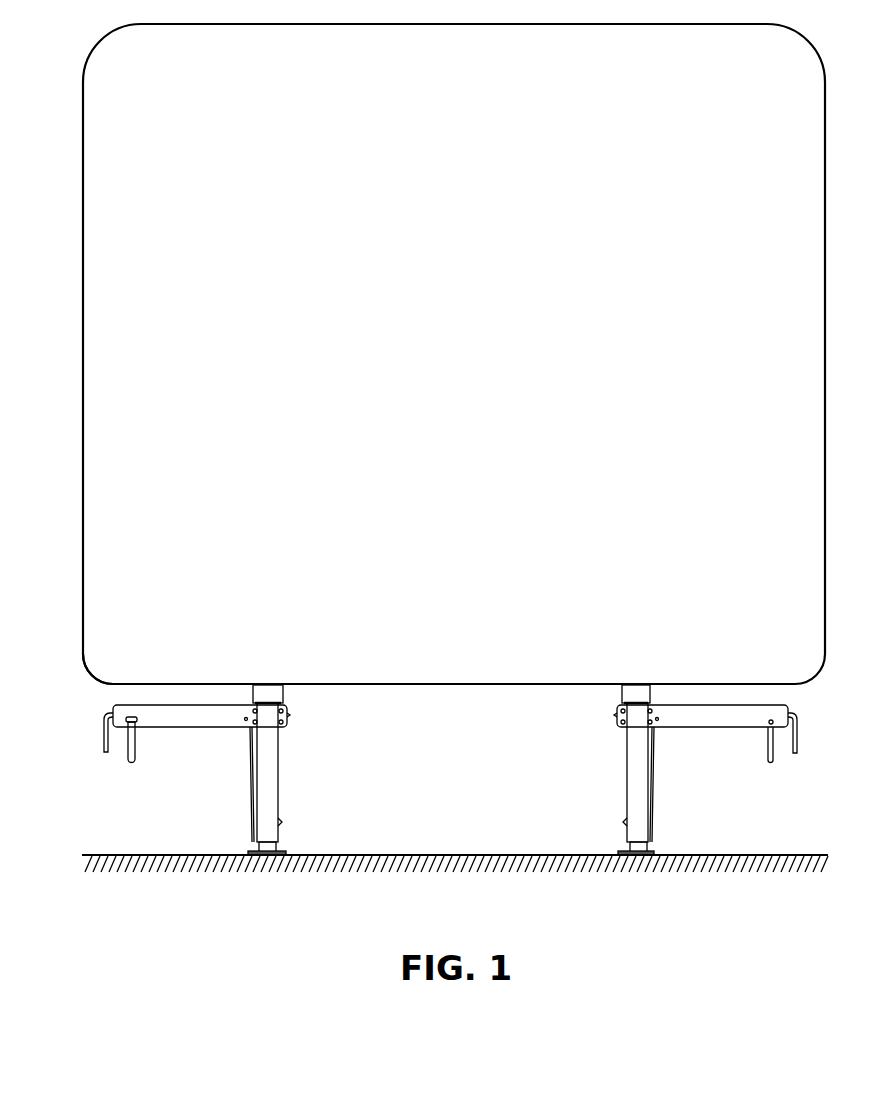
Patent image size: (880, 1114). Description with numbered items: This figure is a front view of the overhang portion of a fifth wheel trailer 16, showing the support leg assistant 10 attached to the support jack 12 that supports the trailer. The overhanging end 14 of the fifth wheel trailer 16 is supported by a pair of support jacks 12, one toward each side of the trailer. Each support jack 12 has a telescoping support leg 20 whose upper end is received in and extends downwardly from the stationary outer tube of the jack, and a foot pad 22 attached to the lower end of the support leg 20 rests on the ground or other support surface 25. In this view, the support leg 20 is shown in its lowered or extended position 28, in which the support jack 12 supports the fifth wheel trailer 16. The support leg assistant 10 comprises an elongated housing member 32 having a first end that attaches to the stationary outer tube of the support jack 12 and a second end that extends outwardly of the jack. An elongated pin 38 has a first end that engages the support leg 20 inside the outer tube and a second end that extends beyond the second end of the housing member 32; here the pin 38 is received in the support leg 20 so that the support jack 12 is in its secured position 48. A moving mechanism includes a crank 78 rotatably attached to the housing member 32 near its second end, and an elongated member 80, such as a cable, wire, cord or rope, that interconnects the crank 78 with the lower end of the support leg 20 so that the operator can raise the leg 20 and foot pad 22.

The support leg assistant 10 is at (720, 740).
The support jack 12 is at (299, 695).
The overhanging end 14 is at (80, 674).
The fifth wheel trailer 16 is at (104, 329).
The support leg 20 is at (270, 770).
The foot pad 22 is at (286, 853).
The support surface 25 is at (429, 843).
The extended position 28 is at (603, 768).
The housing member 32 is at (195, 722).
The pin 38 is at (104, 738).
The secured position 48 is at (600, 715).
The crank 78 is at (133, 748).
The elongated member 80 is at (250, 760).